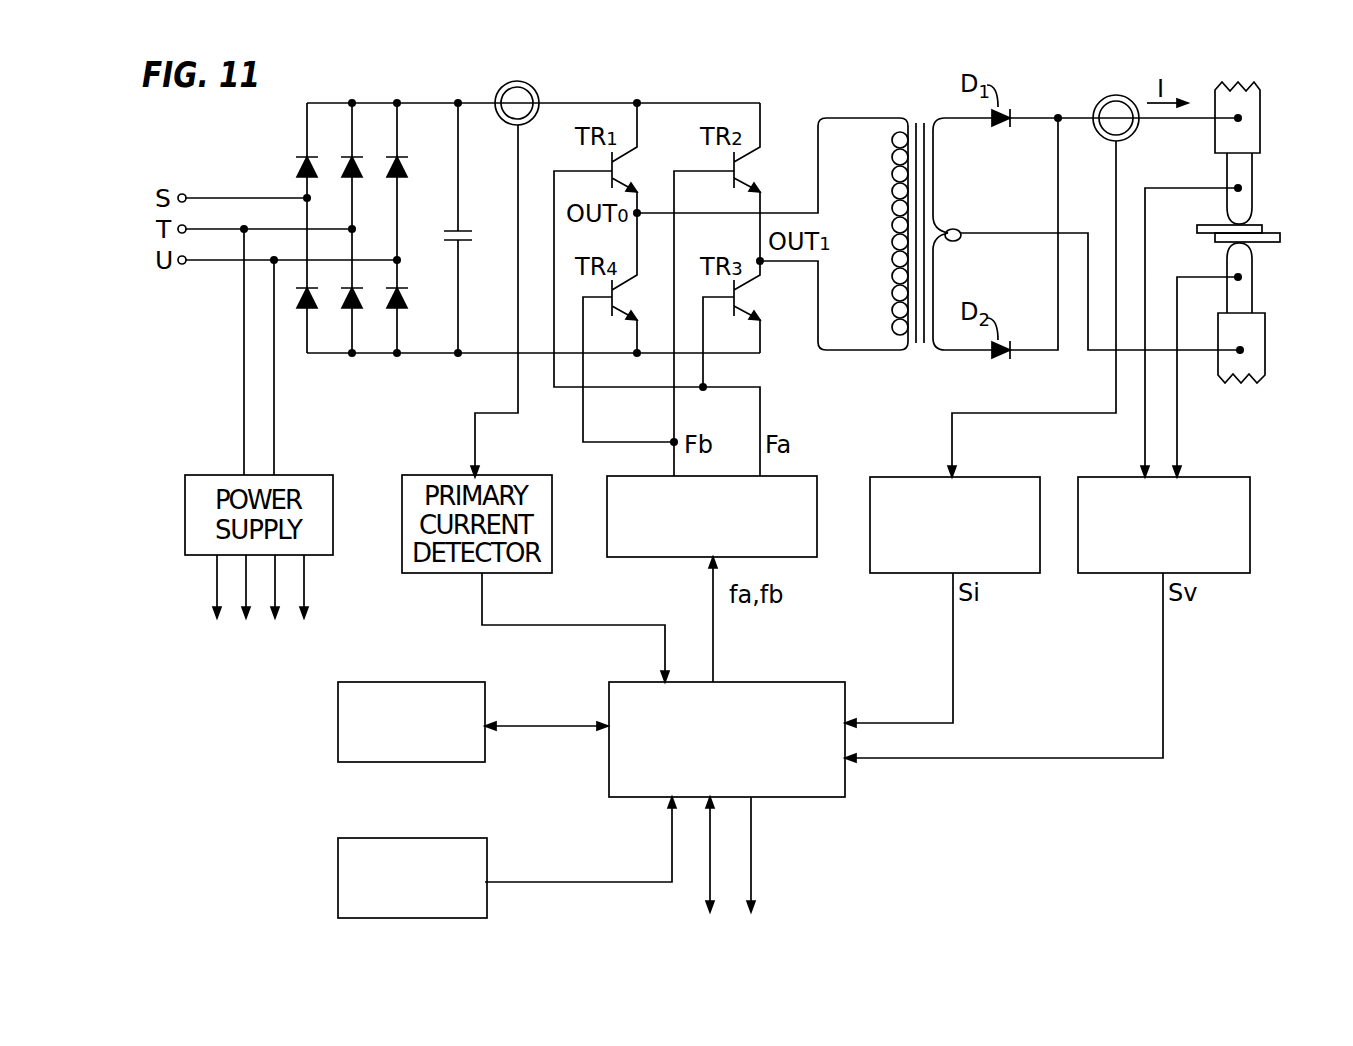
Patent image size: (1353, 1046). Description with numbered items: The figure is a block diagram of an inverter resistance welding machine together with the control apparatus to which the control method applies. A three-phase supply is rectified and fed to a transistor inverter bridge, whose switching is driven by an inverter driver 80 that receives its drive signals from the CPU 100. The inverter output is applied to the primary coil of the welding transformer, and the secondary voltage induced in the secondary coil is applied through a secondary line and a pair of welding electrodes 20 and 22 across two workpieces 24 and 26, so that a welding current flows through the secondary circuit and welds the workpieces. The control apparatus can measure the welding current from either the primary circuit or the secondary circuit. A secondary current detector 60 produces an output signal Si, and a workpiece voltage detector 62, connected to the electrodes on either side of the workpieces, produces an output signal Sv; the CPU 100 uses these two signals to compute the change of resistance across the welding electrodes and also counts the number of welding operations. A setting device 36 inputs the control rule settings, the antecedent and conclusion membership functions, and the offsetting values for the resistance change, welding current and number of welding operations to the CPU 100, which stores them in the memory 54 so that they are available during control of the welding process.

The welding electrode 20 is at (1247, 176).
The welding electrode 22 is at (1248, 284).
The workpiece 24 is at (1260, 223).
The workpiece 26 is at (1263, 243).
The setting device 36 is at (440, 838).
The memory 54 is at (440, 682).
The secondary current detector 60 is at (978, 477).
The workpiece voltage detector 62 is at (1188, 477).
The inverter driver 80 is at (803, 476).
The CPU 100 is at (798, 682).